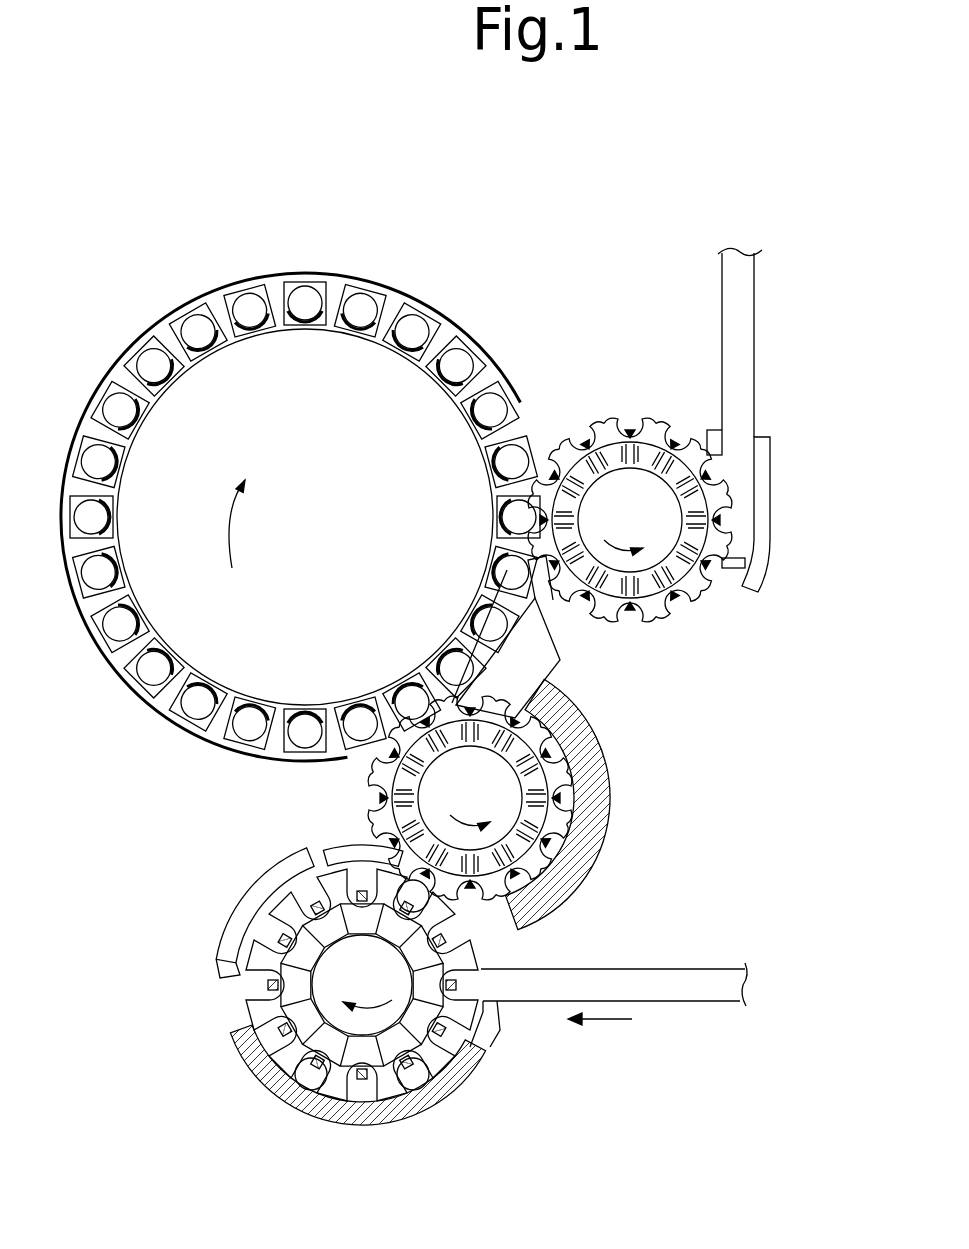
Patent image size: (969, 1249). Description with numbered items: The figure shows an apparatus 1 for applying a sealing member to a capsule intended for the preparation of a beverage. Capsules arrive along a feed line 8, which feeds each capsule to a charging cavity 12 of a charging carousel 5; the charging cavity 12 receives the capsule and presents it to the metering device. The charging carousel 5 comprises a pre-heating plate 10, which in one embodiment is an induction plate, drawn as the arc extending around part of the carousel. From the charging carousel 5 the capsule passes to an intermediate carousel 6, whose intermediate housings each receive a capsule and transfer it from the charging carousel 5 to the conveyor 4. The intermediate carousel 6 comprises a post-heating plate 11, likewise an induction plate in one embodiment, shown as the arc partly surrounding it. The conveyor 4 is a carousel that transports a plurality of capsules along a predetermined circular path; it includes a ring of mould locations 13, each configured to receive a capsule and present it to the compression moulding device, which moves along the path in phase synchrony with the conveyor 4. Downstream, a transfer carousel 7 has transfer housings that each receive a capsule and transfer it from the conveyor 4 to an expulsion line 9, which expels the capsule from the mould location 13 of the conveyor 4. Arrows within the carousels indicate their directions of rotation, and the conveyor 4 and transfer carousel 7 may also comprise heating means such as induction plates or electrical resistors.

The apparatus 1 is at (158, 275).
The conveyor 4 is at (280, 285).
The mould location 13 is at (372, 325).
The transfer carousel 7 is at (605, 428).
The expulsion line 9 is at (745, 338).
The intermediate carousel 6 is at (370, 775).
The post-heating plate 11 is at (596, 765).
The charging carousel 5 is at (248, 1003).
The pre-heating plate 10 is at (366, 1115).
The charging cavity 12 is at (243, 990).
The feed line 8 is at (683, 970).